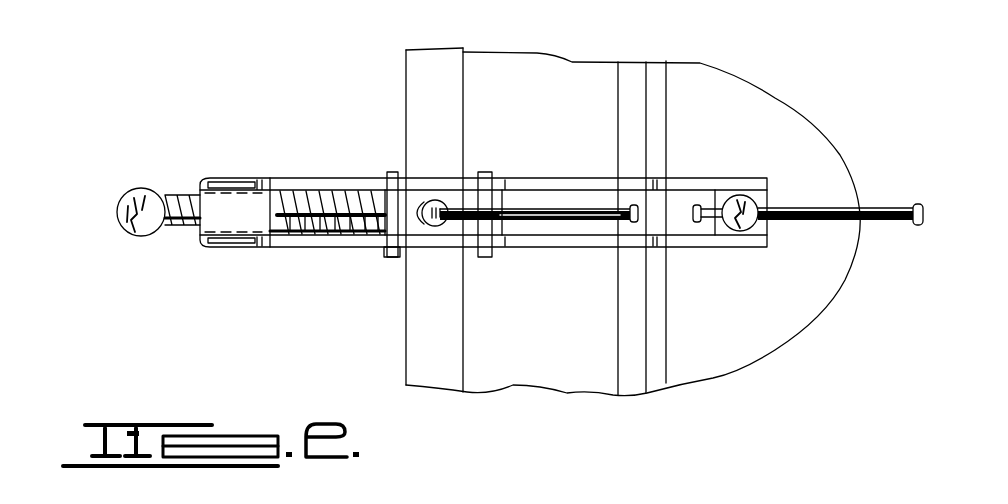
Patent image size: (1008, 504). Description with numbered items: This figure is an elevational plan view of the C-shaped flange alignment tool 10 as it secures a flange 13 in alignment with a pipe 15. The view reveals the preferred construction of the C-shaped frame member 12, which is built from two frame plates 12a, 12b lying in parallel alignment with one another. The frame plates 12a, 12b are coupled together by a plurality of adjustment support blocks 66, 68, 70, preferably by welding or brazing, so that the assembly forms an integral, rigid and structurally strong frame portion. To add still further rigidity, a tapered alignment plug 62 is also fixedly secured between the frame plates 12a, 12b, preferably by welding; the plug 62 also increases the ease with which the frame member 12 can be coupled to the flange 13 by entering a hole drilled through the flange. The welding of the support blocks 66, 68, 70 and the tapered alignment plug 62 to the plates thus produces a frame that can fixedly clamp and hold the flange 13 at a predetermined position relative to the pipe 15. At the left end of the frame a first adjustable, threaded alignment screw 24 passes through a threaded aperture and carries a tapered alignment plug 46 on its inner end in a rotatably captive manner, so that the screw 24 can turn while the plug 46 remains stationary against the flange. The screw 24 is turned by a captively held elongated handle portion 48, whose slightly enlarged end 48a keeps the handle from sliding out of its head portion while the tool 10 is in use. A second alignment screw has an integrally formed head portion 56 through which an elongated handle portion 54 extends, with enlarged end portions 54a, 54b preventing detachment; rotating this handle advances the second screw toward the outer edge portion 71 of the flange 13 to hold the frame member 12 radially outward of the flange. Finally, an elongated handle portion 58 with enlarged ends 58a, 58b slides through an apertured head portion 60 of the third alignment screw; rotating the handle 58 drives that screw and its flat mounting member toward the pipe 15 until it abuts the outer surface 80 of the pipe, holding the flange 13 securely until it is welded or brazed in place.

The C-shaped flange alignment tool 10 is at (262, 92).
The C-shaped frame member 12 is at (276, 252).
The frame plate 12a is at (300, 176).
The frame plate 12b is at (313, 253).
The flange 13 is at (396, 74).
The pipe 15 is at (696, 90).
The first adjustable threaded alignment screw 24 is at (182, 192).
The tapered alignment plug 46 is at (398, 258).
The elongated handle portion 48 is at (116, 204).
The end portion of handle 48a is at (138, 206).
The elongated handle portion 54 is at (538, 206).
The enlarged end portion of handle 54a is at (630, 226).
The enlarged end portion of handle 54b is at (420, 256).
The head portion 56 is at (444, 204).
The elongated handle portion 58 is at (880, 226).
The end of handle 58a is at (920, 206).
The end of handle 58b is at (697, 224).
The apertured head portion 60 is at (738, 200).
The tapered alignment plug 62 is at (480, 254).
The adjustment support block 66 is at (236, 222).
The adjustment support block 68 is at (418, 196).
The adjustment support block 70 is at (763, 200).
The outer edge portion of flange 71 is at (442, 58).
The outer surface of pipe 80 is at (765, 96).